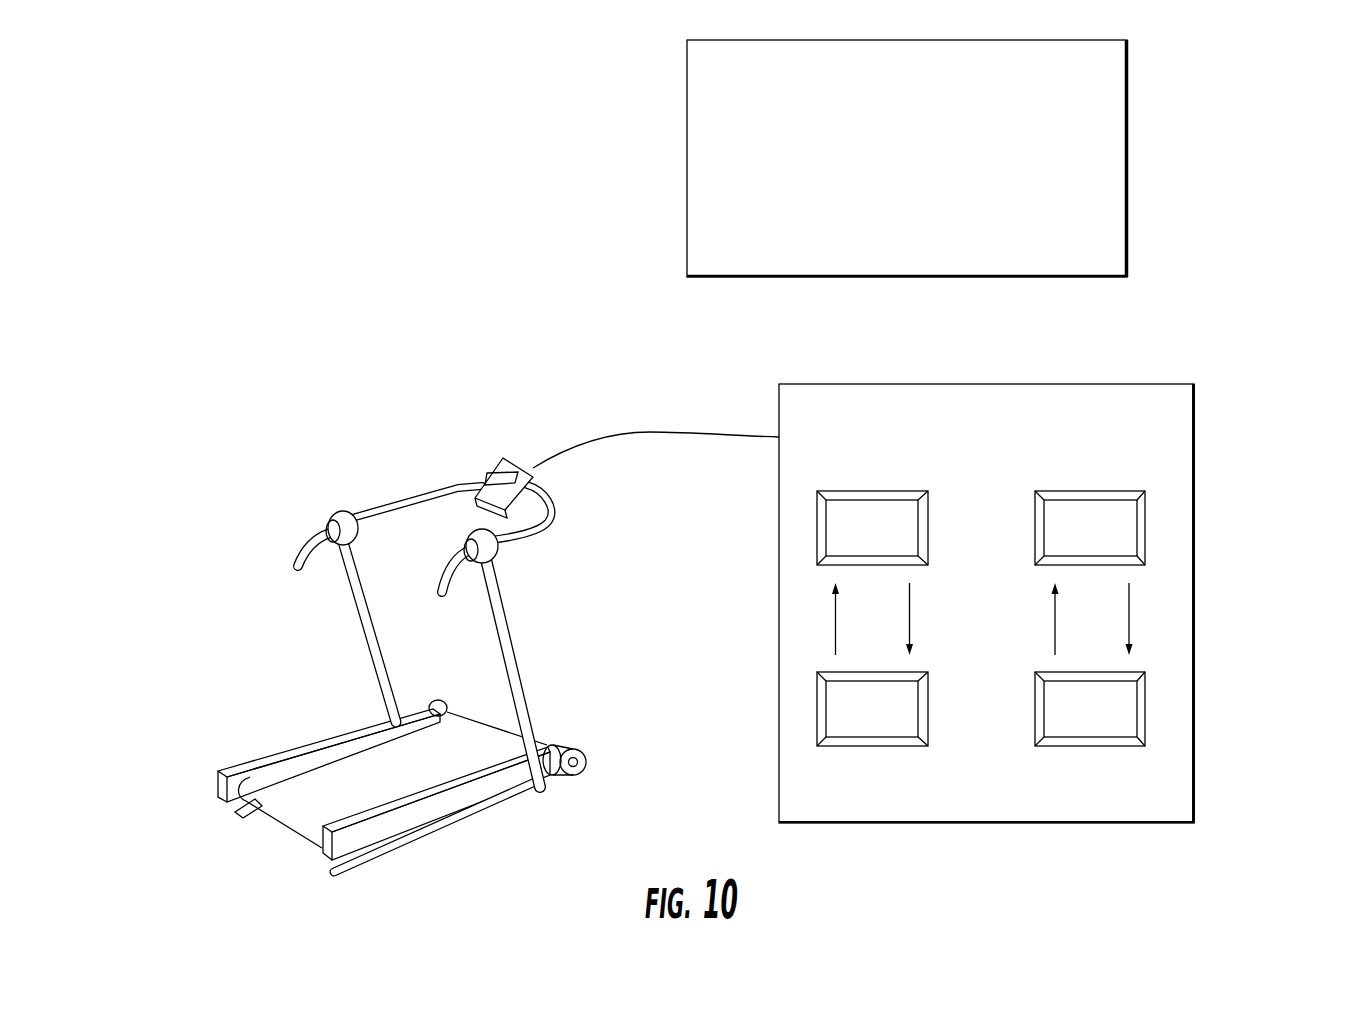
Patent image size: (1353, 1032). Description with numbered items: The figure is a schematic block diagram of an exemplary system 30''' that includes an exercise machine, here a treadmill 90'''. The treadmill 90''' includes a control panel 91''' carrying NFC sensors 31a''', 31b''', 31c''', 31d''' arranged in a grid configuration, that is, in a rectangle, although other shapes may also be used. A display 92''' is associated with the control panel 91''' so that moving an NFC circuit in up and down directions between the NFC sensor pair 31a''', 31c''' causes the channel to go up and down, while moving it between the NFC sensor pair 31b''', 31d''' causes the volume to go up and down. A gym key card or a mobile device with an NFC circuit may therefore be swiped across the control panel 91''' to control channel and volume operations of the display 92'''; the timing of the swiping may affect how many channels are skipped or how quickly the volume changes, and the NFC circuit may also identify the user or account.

The system 30''' is at (763, 456).
The treadmill 90''' is at (498, 652).
The display 92''' is at (965, 158).
The control panel 91''' is at (1003, 595).
The NFC sensor 31a''' is at (813, 523).
The NFC sensor 31b''' is at (1171, 523).
The NFC sensor 31c''' is at (813, 704).
The NFC sensor 31d''' is at (1171, 704).